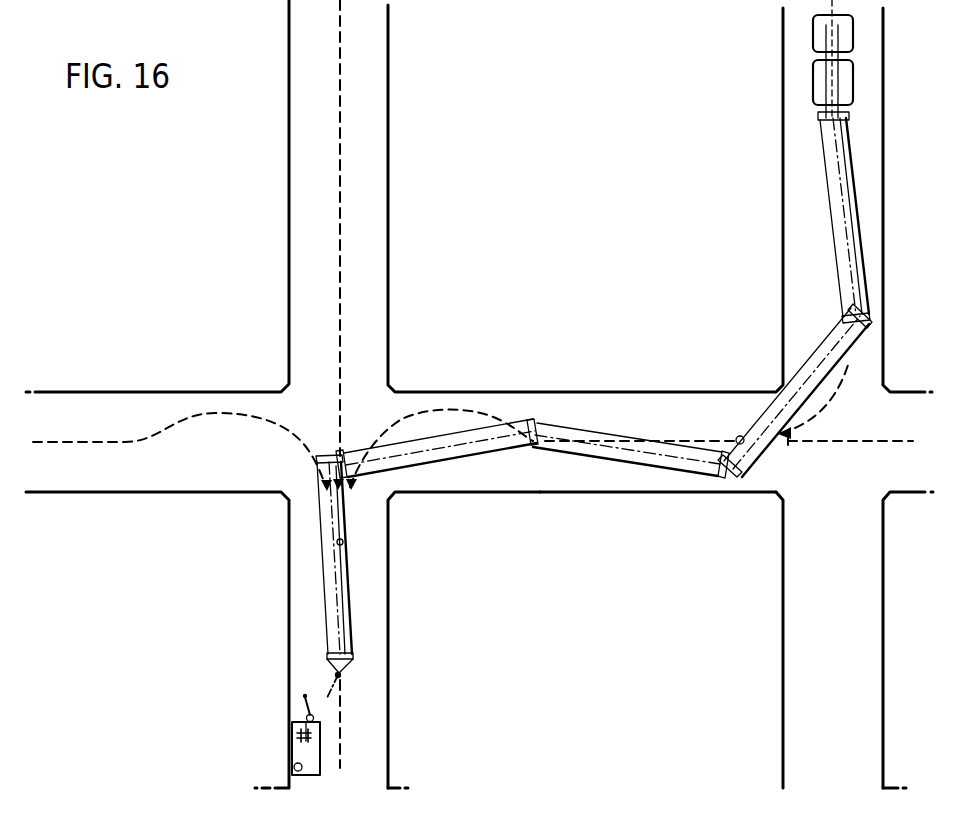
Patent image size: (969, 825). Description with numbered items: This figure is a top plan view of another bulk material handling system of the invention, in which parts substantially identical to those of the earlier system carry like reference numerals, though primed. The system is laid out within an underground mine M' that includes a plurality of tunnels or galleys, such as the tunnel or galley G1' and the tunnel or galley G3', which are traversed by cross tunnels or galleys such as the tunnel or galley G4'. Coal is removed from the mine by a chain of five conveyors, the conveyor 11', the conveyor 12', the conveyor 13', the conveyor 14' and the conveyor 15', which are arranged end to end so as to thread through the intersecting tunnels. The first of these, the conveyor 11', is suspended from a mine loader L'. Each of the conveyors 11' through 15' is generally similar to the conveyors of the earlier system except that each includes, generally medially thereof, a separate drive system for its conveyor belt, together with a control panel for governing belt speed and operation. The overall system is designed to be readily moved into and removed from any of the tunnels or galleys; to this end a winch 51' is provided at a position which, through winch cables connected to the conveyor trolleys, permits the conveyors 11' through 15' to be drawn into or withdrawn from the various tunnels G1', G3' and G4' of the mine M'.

The underground mine M' is at (405, 35).
The mine loader L' is at (799, 61).
The conveyor 11' is at (806, 220).
The conveyor 12' is at (795, 390).
The conveyor 13' is at (631, 413).
The conveyor 14' is at (437, 411).
The conveyor 15' is at (385, 576).
The winch 51' is at (276, 735).
The tunnel or galley G1' is at (160, 640).
The tunnel or galley G3' is at (761, 640).
The tunnel or galley G4' is at (656, 511).